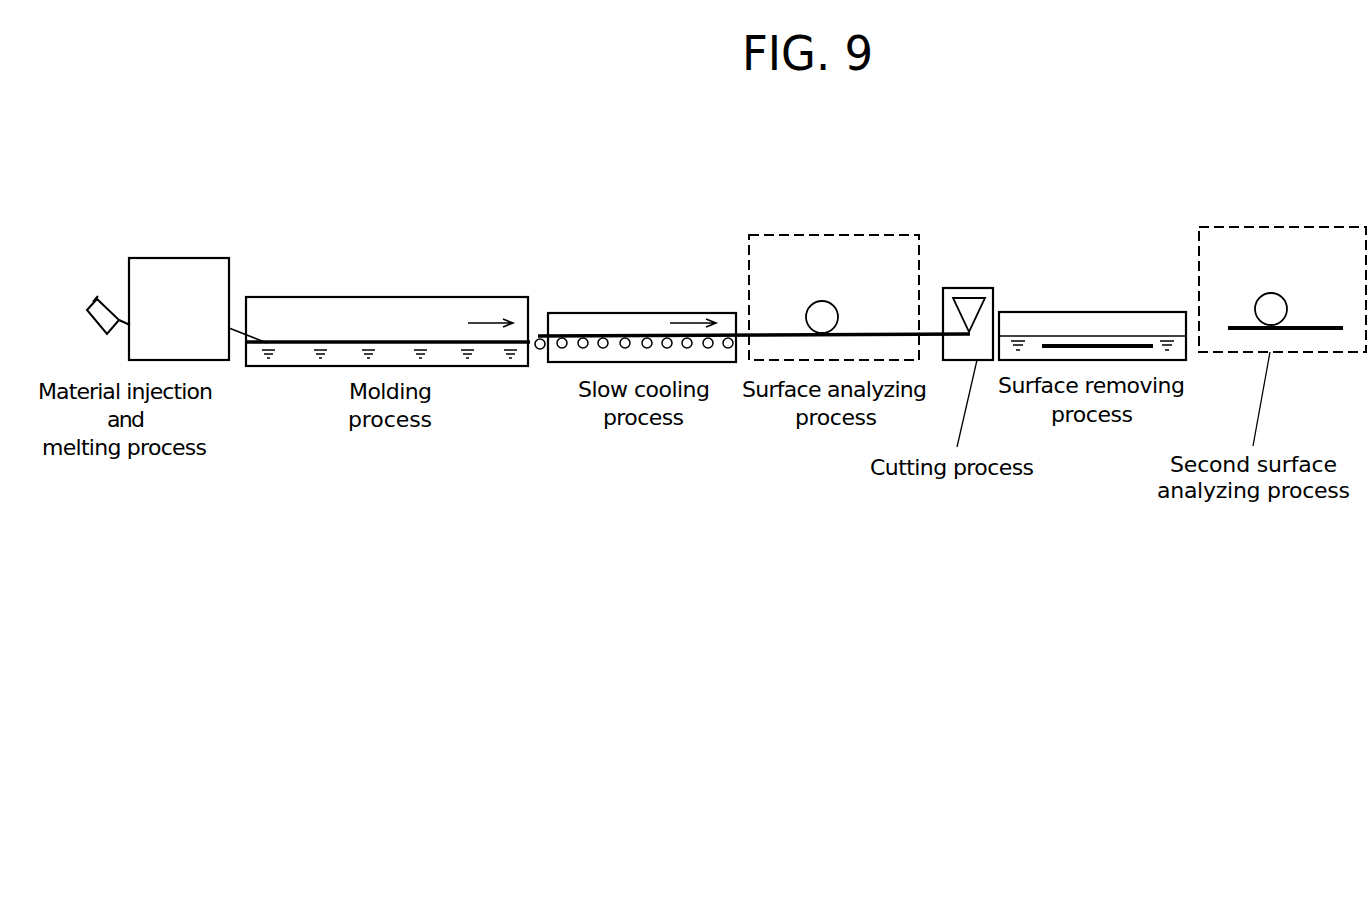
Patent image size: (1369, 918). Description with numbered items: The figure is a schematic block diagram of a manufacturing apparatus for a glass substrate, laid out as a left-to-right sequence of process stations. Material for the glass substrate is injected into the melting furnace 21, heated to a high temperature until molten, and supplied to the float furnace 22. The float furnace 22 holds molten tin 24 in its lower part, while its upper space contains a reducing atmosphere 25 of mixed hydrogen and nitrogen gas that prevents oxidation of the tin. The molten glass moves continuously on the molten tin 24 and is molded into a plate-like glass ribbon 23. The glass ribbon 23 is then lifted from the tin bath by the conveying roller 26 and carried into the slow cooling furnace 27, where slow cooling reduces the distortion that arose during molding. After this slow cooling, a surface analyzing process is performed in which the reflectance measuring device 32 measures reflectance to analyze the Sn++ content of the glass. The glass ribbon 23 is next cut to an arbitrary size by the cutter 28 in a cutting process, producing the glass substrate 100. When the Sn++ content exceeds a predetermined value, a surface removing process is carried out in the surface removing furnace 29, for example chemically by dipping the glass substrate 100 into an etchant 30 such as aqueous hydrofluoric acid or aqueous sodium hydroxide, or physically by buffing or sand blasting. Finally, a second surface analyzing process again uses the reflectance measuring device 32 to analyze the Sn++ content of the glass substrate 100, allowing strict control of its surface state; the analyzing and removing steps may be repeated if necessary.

The melting furnace 21 is at (172, 258).
The float furnace 22 is at (297, 297).
The glass ribbon 23 is at (365, 343).
The molten tin 24 is at (448, 352).
The reducing atmosphere 25 is at (395, 305).
The conveying roller 26 is at (538, 351).
The slow cooling furnace 27 is at (635, 314).
The cutter 28 is at (962, 288).
The surface removing furnace 29 is at (1033, 312).
The etchant 30 is at (1168, 345).
The reflectance measuring device 32 is at (822, 301).
The glass substrate 100 is at (1062, 346).